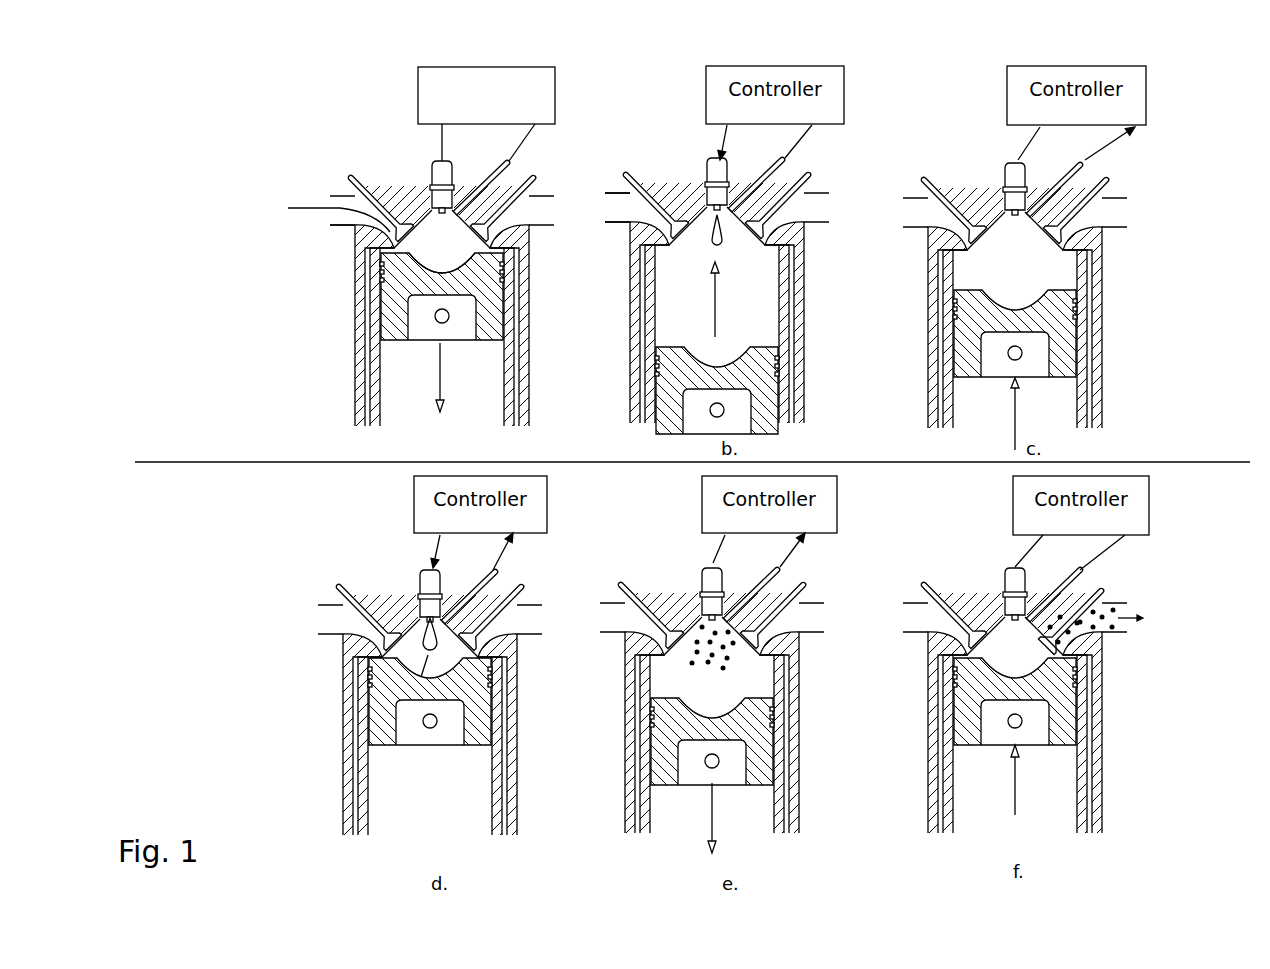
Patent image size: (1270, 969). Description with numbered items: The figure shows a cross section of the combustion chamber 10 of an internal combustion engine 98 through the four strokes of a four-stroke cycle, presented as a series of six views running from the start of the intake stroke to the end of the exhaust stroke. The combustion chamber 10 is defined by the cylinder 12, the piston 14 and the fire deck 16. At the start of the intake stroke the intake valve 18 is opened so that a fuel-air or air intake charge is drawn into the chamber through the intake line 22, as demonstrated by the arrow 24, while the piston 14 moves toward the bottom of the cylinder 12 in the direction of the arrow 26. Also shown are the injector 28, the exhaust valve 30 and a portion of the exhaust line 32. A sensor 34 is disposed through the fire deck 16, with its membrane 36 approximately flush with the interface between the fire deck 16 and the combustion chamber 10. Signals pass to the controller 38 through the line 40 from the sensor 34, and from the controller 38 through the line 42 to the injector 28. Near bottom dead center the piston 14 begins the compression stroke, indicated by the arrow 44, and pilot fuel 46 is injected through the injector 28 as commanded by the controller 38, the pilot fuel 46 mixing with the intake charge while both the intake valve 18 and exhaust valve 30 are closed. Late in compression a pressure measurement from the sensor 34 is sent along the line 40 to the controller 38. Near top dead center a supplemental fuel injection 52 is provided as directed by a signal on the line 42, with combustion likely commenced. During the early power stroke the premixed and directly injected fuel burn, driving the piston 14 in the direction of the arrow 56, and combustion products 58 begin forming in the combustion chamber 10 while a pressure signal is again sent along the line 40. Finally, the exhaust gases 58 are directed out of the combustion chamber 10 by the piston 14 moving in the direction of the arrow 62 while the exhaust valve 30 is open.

The combustion chamber 10 is at (465, 242).
The cylinder 12 is at (372, 346).
The piston 14 is at (394, 338).
The fire deck 16 is at (423, 215).
The intake valve 18 is at (365, 184).
The intake line 22 is at (337, 219).
The arrow 24 is at (302, 207).
The arrow 26 is at (440, 368).
The injector 28 is at (442, 182).
The exhaust valve 30 is at (554, 185).
The exhaust line 32 is at (520, 205).
The sensor 34 is at (484, 180).
The membrane 36 is at (442, 260).
The controller 38 is at (432, 100).
The line 40 is at (535, 138).
The line 42 is at (438, 138).
The arrow 44 is at (715, 298).
The pilot fuel 46 is at (722, 244).
The supplemental fuel injection 52 is at (420, 663).
The arrow 56 is at (712, 808).
The combustion products 58 is at (733, 645).
The arrow 62 is at (1012, 798).
The internal combustion engine 98 is at (429, 257).